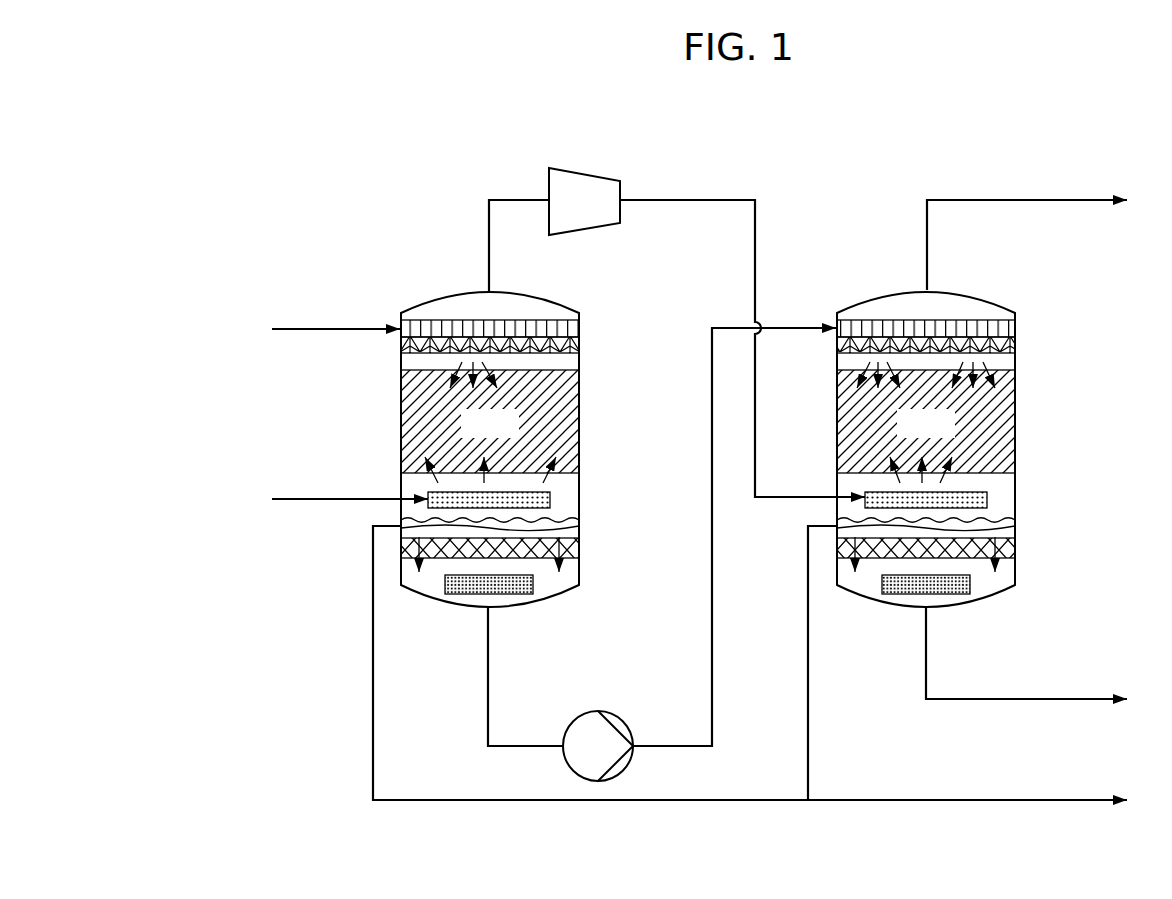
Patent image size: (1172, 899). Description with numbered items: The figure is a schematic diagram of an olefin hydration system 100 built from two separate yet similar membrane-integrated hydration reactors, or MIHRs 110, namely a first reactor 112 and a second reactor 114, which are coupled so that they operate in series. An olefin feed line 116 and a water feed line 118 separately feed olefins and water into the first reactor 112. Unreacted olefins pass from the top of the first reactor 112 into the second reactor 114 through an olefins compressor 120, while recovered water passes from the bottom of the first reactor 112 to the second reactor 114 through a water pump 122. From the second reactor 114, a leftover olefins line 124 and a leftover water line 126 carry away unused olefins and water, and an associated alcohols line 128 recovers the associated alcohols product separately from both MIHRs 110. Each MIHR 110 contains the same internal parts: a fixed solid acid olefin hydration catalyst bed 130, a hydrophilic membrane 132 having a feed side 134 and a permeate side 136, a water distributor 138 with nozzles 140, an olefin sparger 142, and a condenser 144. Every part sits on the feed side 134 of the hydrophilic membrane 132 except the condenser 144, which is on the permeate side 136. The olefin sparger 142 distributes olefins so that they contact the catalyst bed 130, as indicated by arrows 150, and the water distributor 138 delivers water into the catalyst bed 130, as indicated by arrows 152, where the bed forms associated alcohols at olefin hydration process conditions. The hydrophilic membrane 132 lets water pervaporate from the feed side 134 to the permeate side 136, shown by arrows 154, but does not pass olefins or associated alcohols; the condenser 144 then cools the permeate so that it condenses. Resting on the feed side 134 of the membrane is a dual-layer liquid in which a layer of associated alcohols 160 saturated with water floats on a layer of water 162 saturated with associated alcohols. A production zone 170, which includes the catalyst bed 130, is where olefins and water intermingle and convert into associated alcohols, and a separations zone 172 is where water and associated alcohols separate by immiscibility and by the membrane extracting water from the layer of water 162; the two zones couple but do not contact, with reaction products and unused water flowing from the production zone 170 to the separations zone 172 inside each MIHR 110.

The olefin hydration system 100 is at (677, 465).
The membrane-integrated hydration reactor 110 is at (440, 290).
The first reactor 112 is at (515, 436).
The second reactor 114 is at (952, 436).
The olefin feed line 116 is at (283, 497).
The water feed line 118 is at (283, 327).
The olefins compressor 120 is at (570, 168).
The water pump 122 is at (605, 712).
The leftover olefins line 124 is at (1062, 200).
The leftover water line 126 is at (1058, 699).
The associated alcohols line 128 is at (1055, 800).
The fixed solid acid olefin hydration catalyst bed 130 is at (976, 422).
The hydrophilic membrane 132 is at (1015, 547).
The feed side 134 is at (1015, 527).
The permeate side 136 is at (1015, 560).
The water distributor 138 is at (1010, 330).
The nozzles 140 is at (1010, 350).
The olefin sparger 142 is at (987, 497).
The condenser 144 is at (953, 590).
The arrows 150 is at (420, 458).
The arrows 152 is at (415, 375).
The arrows 154 is at (415, 567).
The layer of associated alcohols 160 is at (400, 521).
The layer of water 162 is at (400, 538).
The production zone 170 is at (474, 419).
The separations zone 172 is at (478, 536).